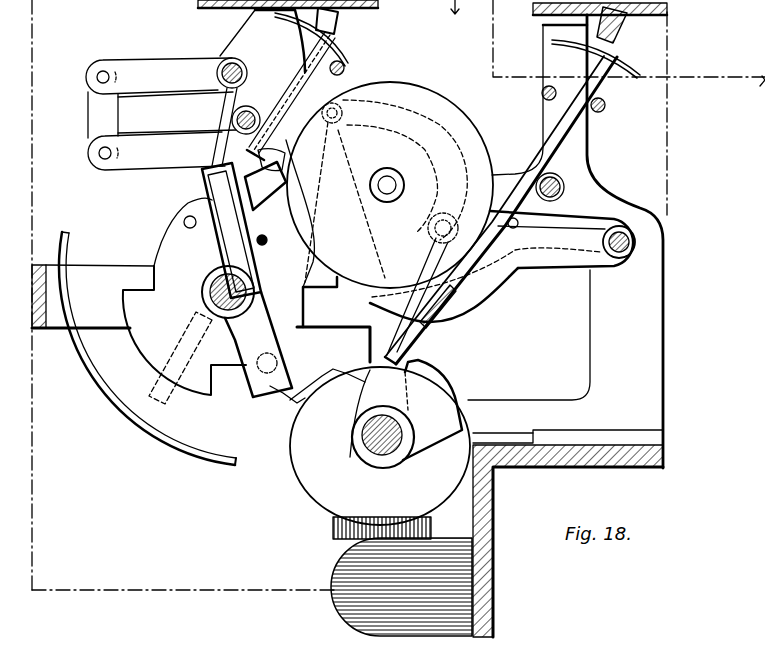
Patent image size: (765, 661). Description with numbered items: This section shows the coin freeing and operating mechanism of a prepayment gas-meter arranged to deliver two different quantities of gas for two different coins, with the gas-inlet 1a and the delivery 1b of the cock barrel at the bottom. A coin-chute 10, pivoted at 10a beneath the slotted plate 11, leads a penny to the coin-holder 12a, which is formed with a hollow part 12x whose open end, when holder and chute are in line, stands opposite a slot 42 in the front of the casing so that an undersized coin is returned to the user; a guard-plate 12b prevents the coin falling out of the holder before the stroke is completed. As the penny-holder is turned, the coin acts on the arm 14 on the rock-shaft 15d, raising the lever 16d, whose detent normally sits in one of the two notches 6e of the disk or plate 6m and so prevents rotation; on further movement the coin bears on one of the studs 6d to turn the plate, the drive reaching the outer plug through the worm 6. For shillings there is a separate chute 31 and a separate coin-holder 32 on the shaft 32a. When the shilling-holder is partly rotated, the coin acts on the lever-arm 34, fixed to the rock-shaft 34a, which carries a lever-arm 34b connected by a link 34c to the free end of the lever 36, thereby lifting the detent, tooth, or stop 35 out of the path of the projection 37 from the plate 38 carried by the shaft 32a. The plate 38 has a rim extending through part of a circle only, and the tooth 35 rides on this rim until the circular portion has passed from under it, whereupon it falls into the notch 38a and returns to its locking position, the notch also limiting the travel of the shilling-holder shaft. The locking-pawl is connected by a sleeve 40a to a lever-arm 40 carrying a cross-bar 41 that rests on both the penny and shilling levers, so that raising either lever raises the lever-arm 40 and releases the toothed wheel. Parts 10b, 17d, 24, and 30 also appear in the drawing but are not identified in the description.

The gas-inlet 1a is at (415, 597).
The delivery 1b is at (350, 537).
The worm 6 is at (139, 296).
The forwardly-projecting studs 6d is at (184, 222).
The notches 6e is at (269, 226).
The disk or plate 6m is at (229, 333).
The coin-chute 10 is at (290, 121).
The pivot of coin-chute 10a is at (232, 93).
The pivot 10b is at (342, 20).
The slotted plate 11 is at (288, 15).
The coin-holder 12a is at (228, 292).
The guard-plate 12b is at (128, 436).
The hollow part of coin-holder 12x is at (203, 184).
The arm 14 is at (189, 113).
The rock-shaft 15d is at (284, 41).
The lever 16d is at (294, 196).
The link 17d is at (166, 76).
The shaft 24 is at (369, 185).
The cam 30 is at (406, 410).
The chute 31 is at (560, 134).
The coin-holder 32 is at (364, 378).
The shaft 32a is at (362, 437).
The lever-arm 34 is at (392, 292).
The rock-shaft 34a is at (430, 228).
The lever-arm 34b is at (394, 170).
The link 34c is at (312, 165).
The detent, tooth, or stop 35 is at (372, 344).
The lever 36 is at (328, 251).
The projection 37 is at (426, 368).
The plate 38 is at (380, 446).
The notch, gap, or break 38a is at (271, 405).
The lever-arm 40 is at (584, 226).
The sleeve 40a is at (640, 240).
The cross-bar 41 is at (505, 236).
The slot 42 is at (172, 393).